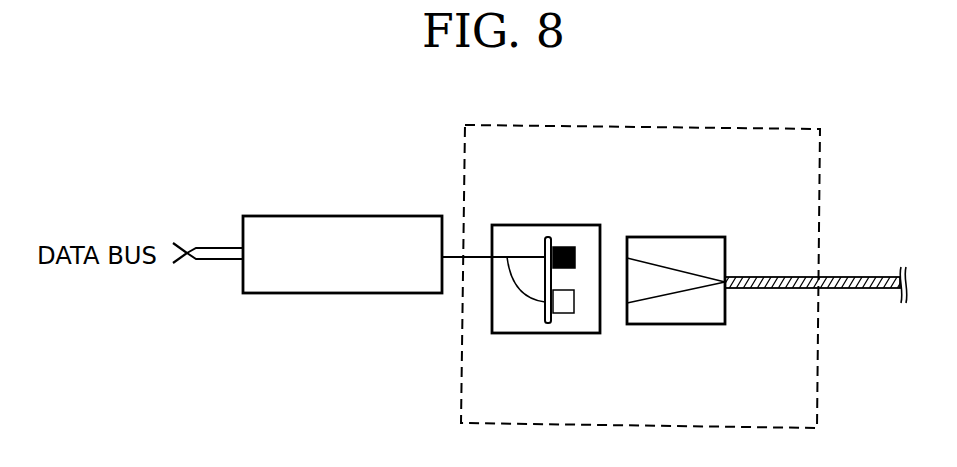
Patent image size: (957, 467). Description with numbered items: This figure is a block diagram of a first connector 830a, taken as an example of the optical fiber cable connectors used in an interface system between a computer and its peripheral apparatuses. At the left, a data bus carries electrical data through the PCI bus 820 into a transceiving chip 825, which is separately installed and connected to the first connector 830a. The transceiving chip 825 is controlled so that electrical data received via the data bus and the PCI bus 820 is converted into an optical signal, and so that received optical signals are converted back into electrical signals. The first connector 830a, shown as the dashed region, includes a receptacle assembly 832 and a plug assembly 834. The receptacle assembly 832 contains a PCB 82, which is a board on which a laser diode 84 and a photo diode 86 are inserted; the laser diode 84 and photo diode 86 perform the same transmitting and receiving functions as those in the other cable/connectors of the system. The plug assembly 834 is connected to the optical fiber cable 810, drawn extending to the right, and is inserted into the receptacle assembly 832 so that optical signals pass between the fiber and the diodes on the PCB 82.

The PCI bus 820 is at (210, 260).
The transceiving chip 825 is at (328, 214).
The first connector 830a is at (820, 193).
The receptacle assembly 832 is at (520, 223).
The PCB 82 is at (543, 316).
The laser diode 84 is at (562, 246).
The photo diode 86 is at (558, 315).
The plug assembly 834 is at (672, 237).
The optical fiber cable 810 is at (780, 290).